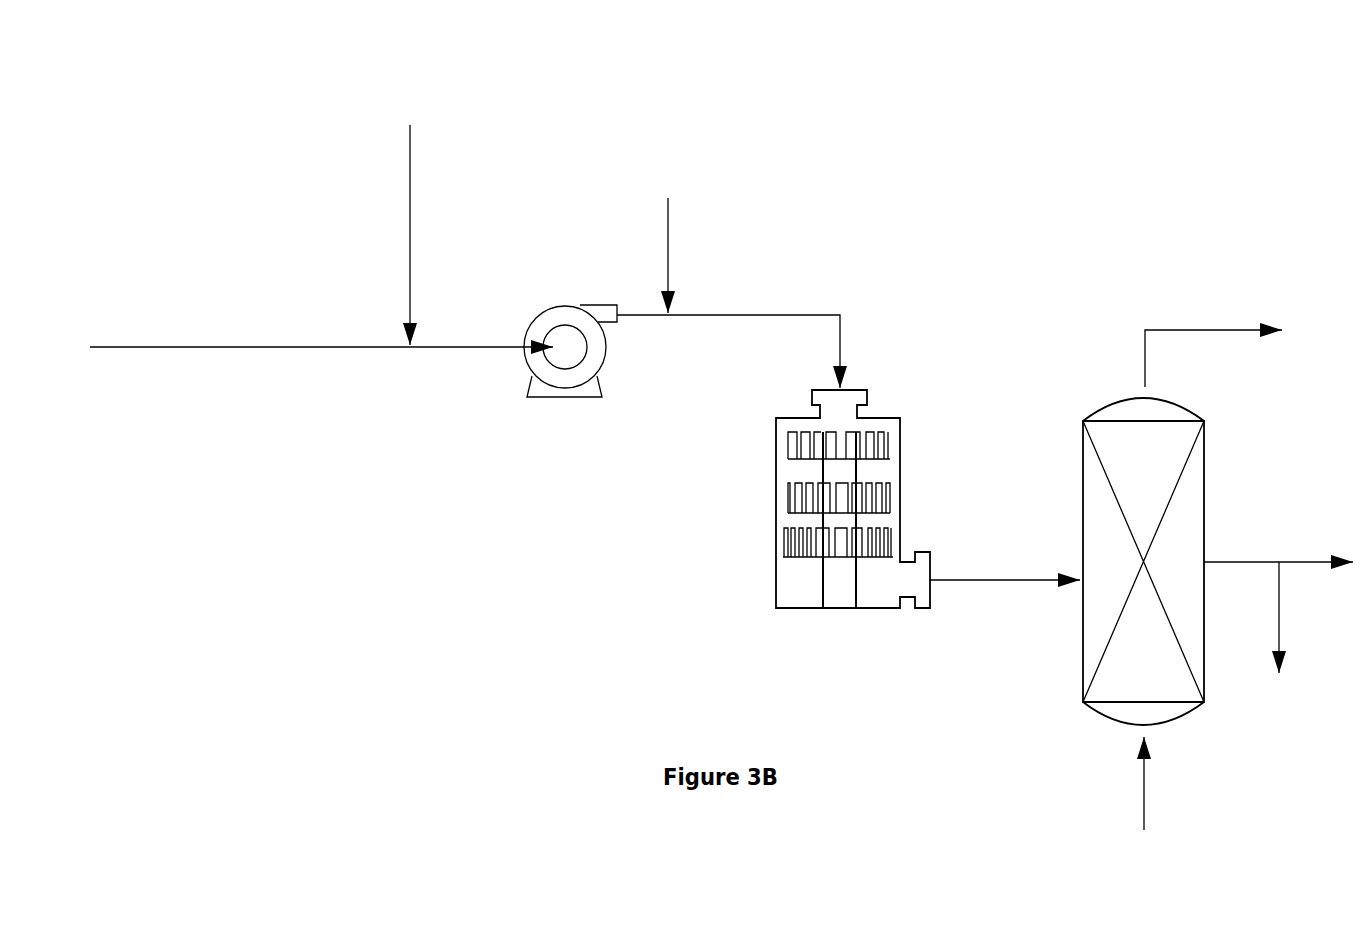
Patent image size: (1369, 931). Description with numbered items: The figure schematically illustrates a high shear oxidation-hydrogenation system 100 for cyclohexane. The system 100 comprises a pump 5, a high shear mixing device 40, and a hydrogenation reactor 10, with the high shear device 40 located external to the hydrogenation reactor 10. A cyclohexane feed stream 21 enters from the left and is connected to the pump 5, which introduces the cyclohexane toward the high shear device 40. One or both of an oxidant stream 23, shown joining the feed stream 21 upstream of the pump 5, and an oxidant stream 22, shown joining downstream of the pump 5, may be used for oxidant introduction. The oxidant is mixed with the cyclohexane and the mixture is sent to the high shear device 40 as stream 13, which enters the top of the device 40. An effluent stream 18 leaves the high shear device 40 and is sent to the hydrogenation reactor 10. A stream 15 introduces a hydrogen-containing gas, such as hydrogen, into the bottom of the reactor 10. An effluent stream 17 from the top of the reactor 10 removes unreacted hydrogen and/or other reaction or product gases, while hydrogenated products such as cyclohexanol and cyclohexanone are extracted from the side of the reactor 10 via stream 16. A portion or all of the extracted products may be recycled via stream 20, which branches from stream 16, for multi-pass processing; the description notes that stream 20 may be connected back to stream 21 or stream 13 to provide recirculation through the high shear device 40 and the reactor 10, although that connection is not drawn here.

The high shear oxidation-hydrogenation system 100 is at (1040, 148).
The cyclohexane feed stream 21 is at (275, 345).
The oxidant stream 23 is at (408, 152).
The pump 5 is at (570, 307).
The oxidant stream 22 is at (667, 222).
The mixed feed stream 13 is at (787, 315).
The high shear mixing device 40 is at (890, 415).
The effluent stream 18 is at (1035, 577).
The hydrogenation reactor 10 is at (1217, 457).
The effluent stream 17 is at (1192, 330).
The product stream 16 is at (1240, 562).
The recycle stream 20 is at (1279, 617).
The hydrogen-containing gas stream 15 is at (1117, 783).